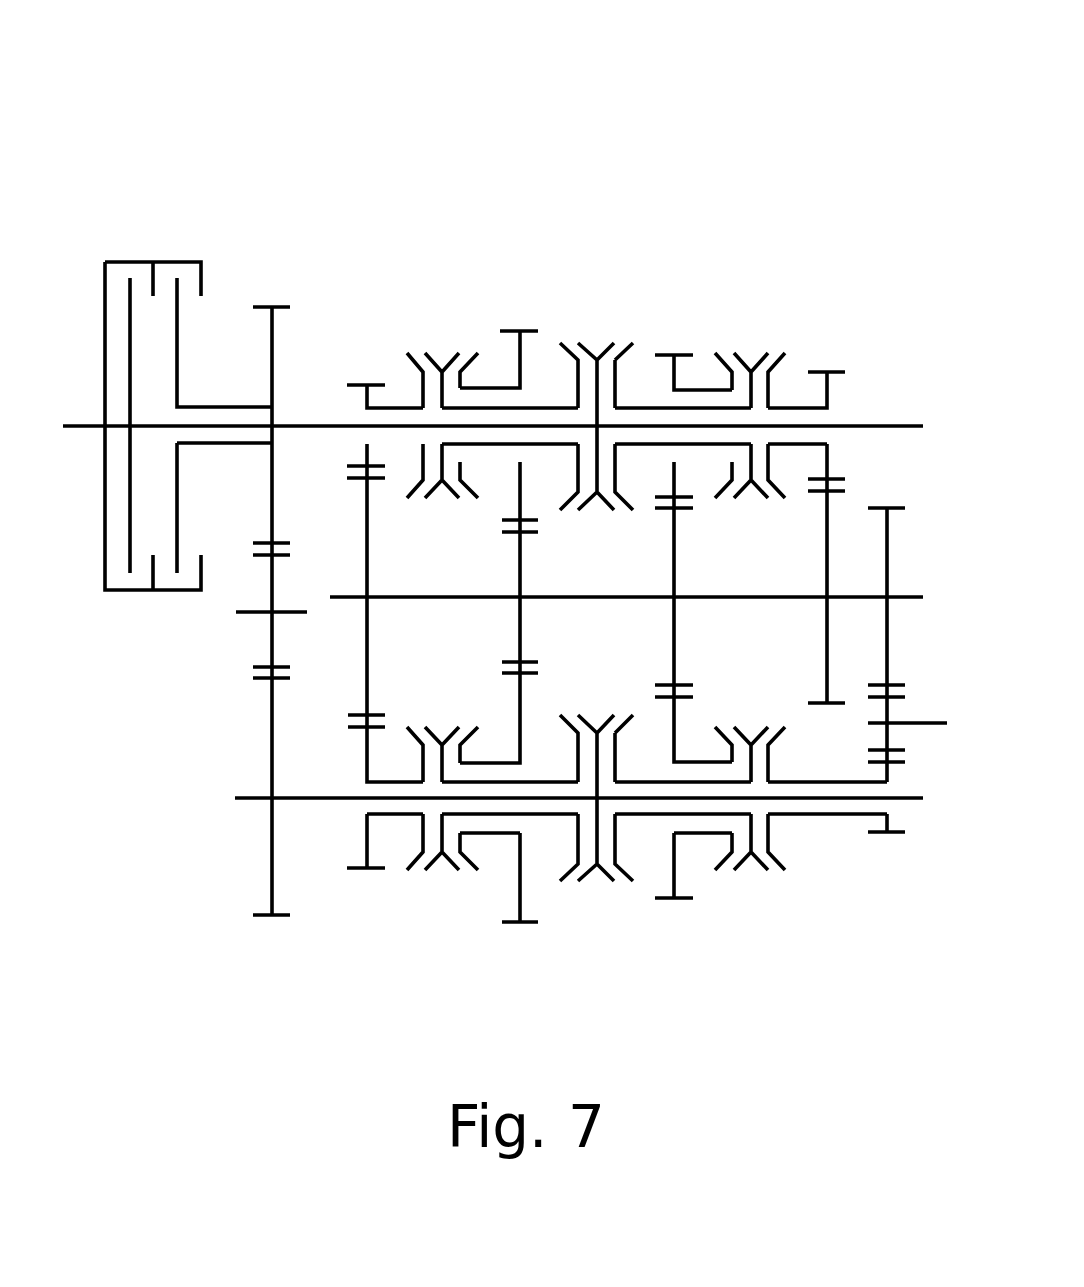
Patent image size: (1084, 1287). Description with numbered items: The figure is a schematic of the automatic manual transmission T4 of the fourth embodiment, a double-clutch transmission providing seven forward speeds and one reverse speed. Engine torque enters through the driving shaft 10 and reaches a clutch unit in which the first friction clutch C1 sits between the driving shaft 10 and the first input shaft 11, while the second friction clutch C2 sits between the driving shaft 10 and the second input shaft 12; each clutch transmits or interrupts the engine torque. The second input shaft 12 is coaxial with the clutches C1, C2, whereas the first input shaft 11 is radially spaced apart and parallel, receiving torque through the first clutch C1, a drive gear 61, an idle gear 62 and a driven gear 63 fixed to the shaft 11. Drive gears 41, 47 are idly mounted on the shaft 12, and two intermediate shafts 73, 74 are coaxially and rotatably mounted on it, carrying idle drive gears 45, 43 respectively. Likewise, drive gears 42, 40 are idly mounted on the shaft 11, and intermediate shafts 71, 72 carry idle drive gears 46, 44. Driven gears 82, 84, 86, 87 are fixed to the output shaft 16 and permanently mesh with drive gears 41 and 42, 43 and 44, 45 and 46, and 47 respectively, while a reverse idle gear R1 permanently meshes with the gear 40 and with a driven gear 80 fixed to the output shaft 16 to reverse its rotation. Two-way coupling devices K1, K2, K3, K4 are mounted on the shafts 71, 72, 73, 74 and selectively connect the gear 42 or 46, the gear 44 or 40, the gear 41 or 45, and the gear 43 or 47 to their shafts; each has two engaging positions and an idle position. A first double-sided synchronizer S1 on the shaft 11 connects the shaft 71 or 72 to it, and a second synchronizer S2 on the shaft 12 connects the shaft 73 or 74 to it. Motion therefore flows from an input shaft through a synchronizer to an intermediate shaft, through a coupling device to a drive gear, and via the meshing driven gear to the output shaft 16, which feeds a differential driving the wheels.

The automatic manual transmission T4 is at (386, 146).
The driving shaft 10 is at (75, 422).
The first input shaft 11 is at (327, 800).
The second input shaft 12 is at (330, 428).
The output shaft 16 is at (342, 595).
The first friction clutch C1 is at (188, 273).
The second friction clutch C2 is at (142, 273).
The two-way coupling device K1 is at (443, 884).
The two-way coupling device K2 is at (750, 884).
The two-way coupling device K3 is at (443, 345).
The two-way coupling device K4 is at (750, 341).
The first synchronization and engagement device S1 is at (597, 894).
The second synchronization and engagement device S2 is at (597, 332).
The reverse idle gear R1 is at (873, 750).
The drive gear 40 is at (870, 833).
The drive gear 41 is at (355, 383).
The drive gear 42 is at (378, 870).
The drive gear 43 is at (685, 353).
The drive gear 44 is at (687, 902).
The drive gear 45 is at (507, 328).
The drive gear 46 is at (532, 927).
The drive gear 47 is at (835, 368).
The drive gear 61 is at (283, 305).
The idle gear 62 is at (260, 667).
The driven gear 63 is at (257, 917).
The intermediate shaft 71 is at (548, 780).
The intermediate shaft 72 is at (665, 780).
The intermediate shaft 73 is at (538, 446).
The intermediate shaft 74 is at (638, 512).
The driven gear 80 is at (875, 508).
The driven gear 82 is at (350, 712).
The driven gear 84 is at (686, 510).
The driven gear 86 is at (505, 662).
The driven gear 87 is at (813, 700).